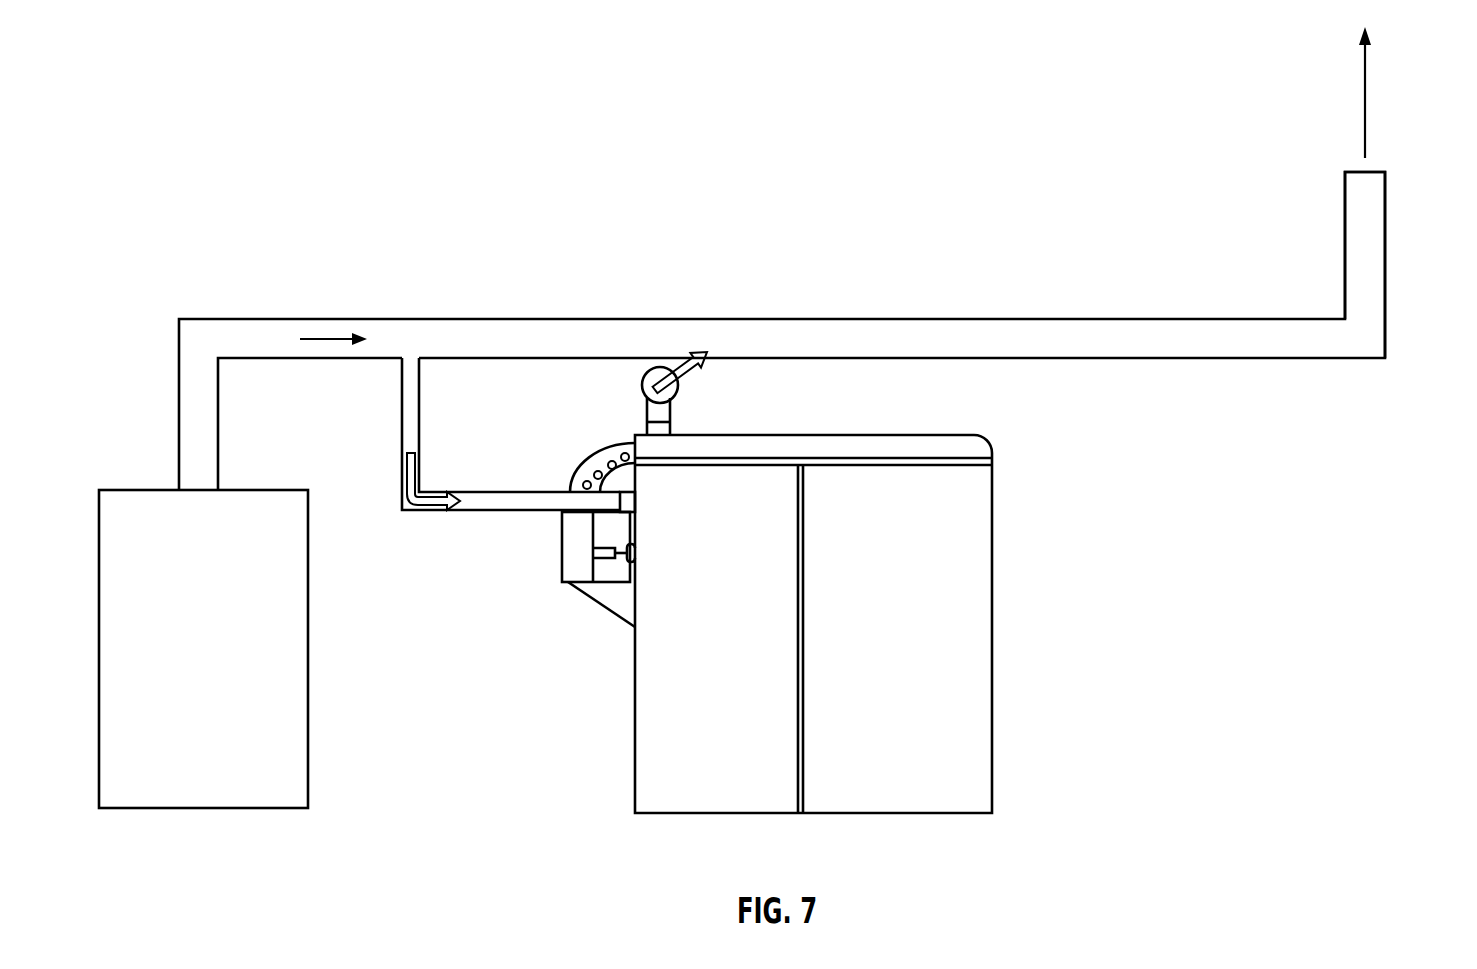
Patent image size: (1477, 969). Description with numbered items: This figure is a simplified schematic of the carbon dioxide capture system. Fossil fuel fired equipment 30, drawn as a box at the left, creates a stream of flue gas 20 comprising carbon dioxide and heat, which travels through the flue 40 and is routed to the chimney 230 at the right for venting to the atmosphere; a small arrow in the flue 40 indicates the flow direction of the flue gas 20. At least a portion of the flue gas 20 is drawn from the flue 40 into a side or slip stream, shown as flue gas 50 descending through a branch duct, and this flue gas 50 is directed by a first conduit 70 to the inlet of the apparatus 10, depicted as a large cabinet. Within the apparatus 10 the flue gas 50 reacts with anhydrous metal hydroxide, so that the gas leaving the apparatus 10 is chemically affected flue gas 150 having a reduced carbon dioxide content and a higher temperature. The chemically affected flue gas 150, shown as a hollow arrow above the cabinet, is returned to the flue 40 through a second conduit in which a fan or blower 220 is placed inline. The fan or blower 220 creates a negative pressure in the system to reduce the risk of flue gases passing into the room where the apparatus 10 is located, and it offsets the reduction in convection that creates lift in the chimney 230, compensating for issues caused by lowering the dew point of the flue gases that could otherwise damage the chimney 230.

The apparatus 10 is at (922, 813).
The flue gases 20 is at (337, 337).
The fossil fuel fired equipment 30 is at (203, 809).
The flue 40 is at (262, 318).
The flue gas 50 is at (428, 507).
The first conduit 70 is at (510, 513).
The chemically affected flue gas 150 is at (690, 355).
The fan or blower 220 is at (682, 393).
The chimney 230 is at (1386, 245).